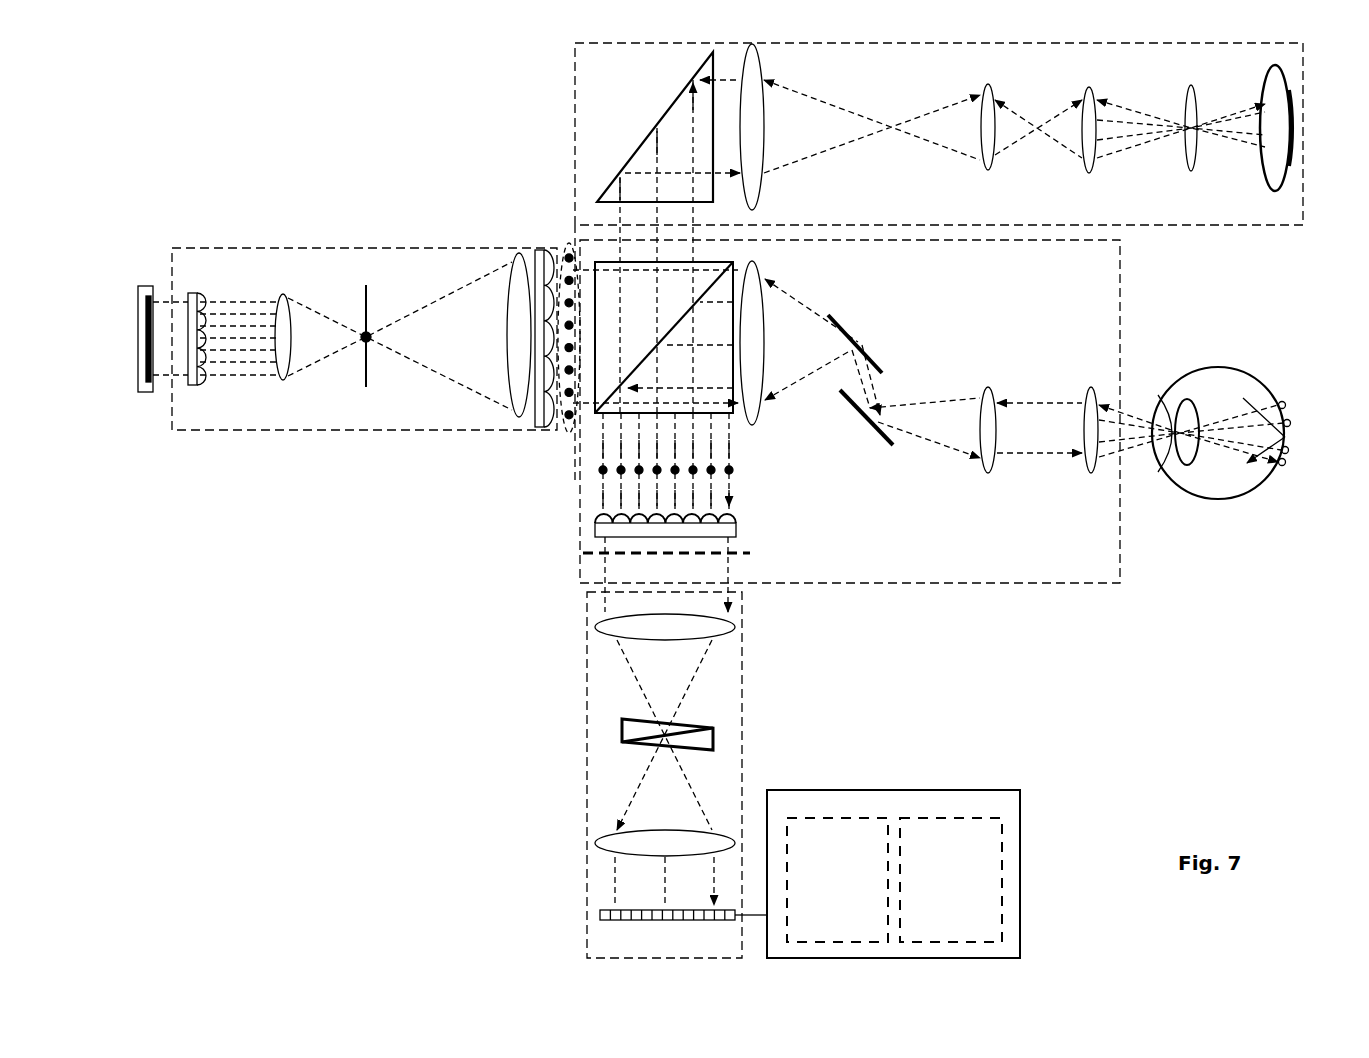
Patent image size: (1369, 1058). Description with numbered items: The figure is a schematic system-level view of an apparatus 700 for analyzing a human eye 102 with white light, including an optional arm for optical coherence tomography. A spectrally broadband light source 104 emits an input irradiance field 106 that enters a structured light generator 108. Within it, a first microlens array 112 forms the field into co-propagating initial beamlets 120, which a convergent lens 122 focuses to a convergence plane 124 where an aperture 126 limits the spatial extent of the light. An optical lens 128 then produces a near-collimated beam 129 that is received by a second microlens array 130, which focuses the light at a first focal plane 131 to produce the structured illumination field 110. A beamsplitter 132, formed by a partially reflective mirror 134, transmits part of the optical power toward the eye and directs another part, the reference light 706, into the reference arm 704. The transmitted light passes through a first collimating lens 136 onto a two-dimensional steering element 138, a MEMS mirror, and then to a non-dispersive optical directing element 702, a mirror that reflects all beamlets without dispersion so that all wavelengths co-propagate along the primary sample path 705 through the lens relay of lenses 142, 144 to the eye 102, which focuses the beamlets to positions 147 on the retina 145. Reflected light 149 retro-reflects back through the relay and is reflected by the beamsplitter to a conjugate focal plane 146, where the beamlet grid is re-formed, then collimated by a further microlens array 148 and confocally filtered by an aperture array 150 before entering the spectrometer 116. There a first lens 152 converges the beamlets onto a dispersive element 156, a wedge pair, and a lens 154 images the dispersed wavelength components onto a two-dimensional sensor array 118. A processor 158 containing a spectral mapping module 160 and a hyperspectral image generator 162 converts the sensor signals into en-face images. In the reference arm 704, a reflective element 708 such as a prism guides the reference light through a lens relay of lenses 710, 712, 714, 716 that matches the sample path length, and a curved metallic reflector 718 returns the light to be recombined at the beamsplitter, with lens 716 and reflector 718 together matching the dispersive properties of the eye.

The apparatus 700 is at (338, 186).
The eye 102 is at (1238, 368).
The light source 104 is at (142, 284).
The input irradiance field 106 is at (160, 380).
The structured light generator 108 is at (218, 431).
The structured illumination field 110 is at (562, 250).
The first microlens array 112 is at (207, 292).
The spectrometer 116 is at (742, 688).
The two-dimensional sensor array 118 is at (600, 912).
The initial beamlets 120 is at (245, 322).
The convergent lens 122 is at (286, 293).
The convergence plane 124 is at (366, 283).
The aperture 126 is at (372, 332).
The optical lens 128 is at (513, 418).
The near-collimated beam 129 is at (540, 430).
The second microlens array 130 is at (540, 248).
The first focal plane 131 is at (572, 200).
The beamsplitter 132 is at (604, 262).
The partially reflective mirror 134 is at (648, 352).
The first collimating lens 136 is at (765, 272).
The two-dimensional steering element 138 is at (868, 350).
The lens 142 is at (988, 385).
The lens 144 is at (1090, 386).
The retina 145 is at (1290, 402).
The conjugate focal plane 146 is at (735, 470).
The position on the retina 147 is at (1290, 460).
The further microlens array 148 is at (738, 522).
The reflected light 149 is at (1255, 475).
The aperture array 150 is at (752, 552).
The first lens 152 is at (735, 625).
The lens 154 is at (598, 845).
The dispersive element 156 is at (618, 730).
The processor 158 is at (1021, 858).
The spectral mapping module 160 is at (838, 817).
The hyperspectral image generator 162 is at (948, 817).
The non-dispersive optical directing element 702 is at (860, 415).
The reference arm 704 is at (575, 80).
The primary sample path 705 is at (1120, 272).
The reference light 706 is at (862, 145).
The reflective element 708 is at (643, 140).
The lens 710 is at (765, 78).
The lens 712 is at (980, 95).
The lens 714 is at (1082, 95).
The lens 716 is at (1184, 92).
The curved metallic reflector 718 is at (1262, 175).